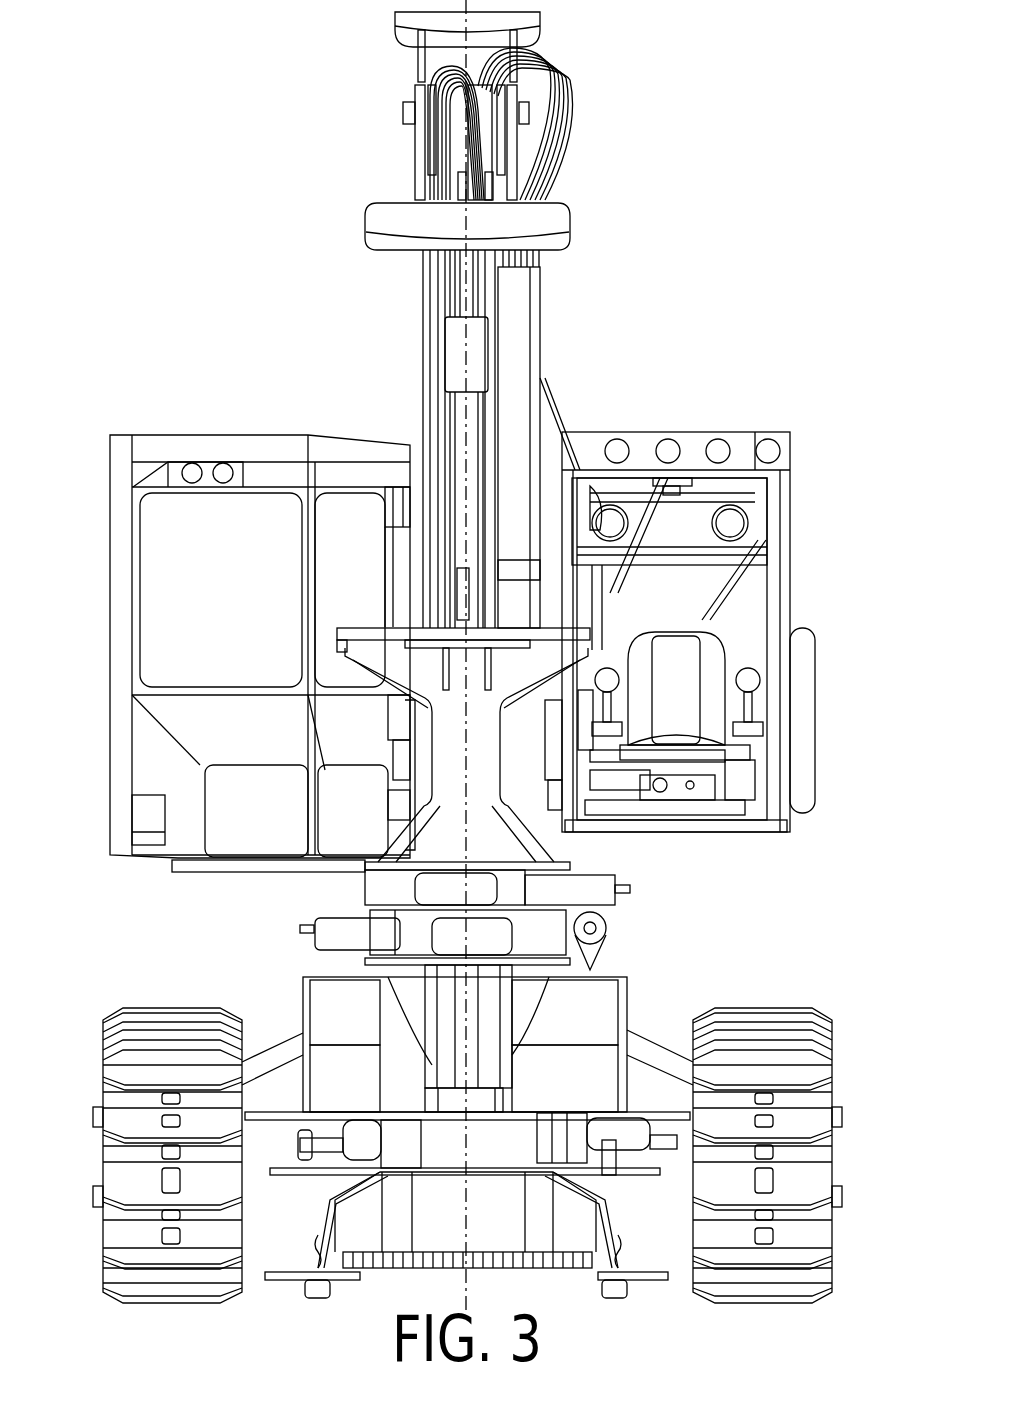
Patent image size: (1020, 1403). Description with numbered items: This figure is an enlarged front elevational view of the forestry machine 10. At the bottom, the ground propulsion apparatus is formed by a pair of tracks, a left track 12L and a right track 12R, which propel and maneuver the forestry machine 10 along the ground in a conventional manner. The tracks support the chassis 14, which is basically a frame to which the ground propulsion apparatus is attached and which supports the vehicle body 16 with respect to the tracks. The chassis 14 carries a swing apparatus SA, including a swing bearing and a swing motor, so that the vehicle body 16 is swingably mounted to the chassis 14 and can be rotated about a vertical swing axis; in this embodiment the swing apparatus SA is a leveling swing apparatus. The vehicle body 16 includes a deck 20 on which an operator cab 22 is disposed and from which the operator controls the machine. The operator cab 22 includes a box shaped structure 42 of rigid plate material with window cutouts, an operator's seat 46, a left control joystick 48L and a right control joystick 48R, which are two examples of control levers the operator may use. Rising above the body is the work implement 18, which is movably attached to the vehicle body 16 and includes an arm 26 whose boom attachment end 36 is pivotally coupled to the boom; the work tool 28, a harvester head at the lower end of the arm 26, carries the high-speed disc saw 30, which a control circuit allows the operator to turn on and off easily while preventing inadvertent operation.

The forestry machine 10 is at (668, 100).
The right track 12R is at (124, 1010).
The left track 12L is at (808, 1015).
The chassis 14 is at (634, 983).
The vehicle body 16 is at (714, 377).
The work implement 18 is at (388, 190).
The deck 20 is at (205, 872).
The operator cab 22 is at (765, 427).
The arm 26 is at (512, 327).
The work tool 28 is at (442, 1030).
The saw 30 is at (566, 1262).
The boom attachment end 36 is at (460, 57).
The box shaped structure 42 is at (776, 548).
The operator's seat 46 is at (660, 636).
The right control joystick 48R is at (616, 705).
The left control joystick 48L is at (756, 712).
The swing apparatus SA is at (634, 947).